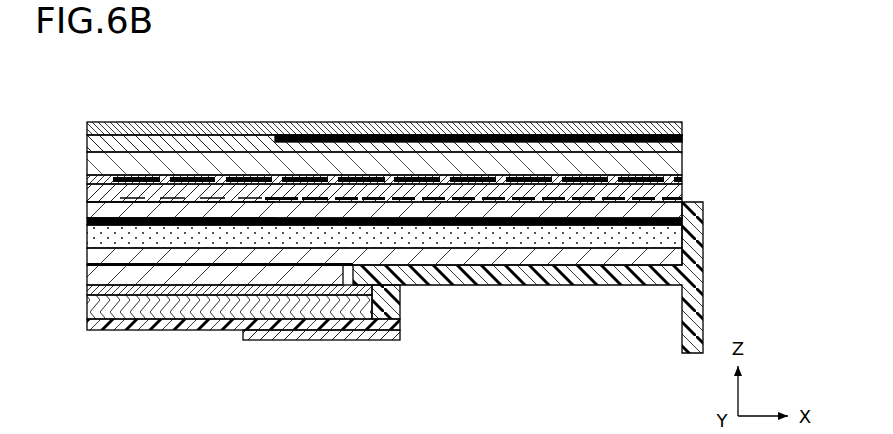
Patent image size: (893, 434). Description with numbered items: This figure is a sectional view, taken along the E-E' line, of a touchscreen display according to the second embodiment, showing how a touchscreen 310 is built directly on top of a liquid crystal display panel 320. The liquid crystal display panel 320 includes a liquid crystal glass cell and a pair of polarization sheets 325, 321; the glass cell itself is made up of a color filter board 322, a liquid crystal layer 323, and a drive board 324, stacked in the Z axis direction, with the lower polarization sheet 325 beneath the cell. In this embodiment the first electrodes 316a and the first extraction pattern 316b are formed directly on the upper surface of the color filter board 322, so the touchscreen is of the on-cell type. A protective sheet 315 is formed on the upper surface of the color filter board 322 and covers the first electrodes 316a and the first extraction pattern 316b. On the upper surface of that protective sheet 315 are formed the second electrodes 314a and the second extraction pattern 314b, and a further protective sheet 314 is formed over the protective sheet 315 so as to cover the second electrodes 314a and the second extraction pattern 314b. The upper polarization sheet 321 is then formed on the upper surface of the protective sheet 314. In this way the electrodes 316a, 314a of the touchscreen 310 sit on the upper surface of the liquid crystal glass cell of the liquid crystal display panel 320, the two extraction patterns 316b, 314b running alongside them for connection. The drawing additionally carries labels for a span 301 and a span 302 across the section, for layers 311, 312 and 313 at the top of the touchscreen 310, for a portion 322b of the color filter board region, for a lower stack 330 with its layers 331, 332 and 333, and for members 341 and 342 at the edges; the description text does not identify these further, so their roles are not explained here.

The first region 301 is at (275, 47).
The second region 302 is at (682, 47).
The touchscreen 310 is at (84, 123).
The first layer 311 is at (683, 128).
The light shielding layer 312 is at (683, 138).
The adhesive layer 313 is at (683, 148).
The polarization sheet 321 is at (683, 165).
The protective sheet 314 is at (425, 141).
The second electrodes 314a is at (122, 178).
The second extraction pattern 314b is at (314, 178).
The protective sheet 315 is at (425, 151).
The first electrodes 316a is at (212, 196).
The first extraction pattern 316b is at (399, 197).
The liquid crystal display panel 320 is at (84, 205).
The color filter board 322 is at (384, 297).
The display layer portion 322b is at (160, 207).
The liquid crystal layer 323 is at (568, 240).
The drive board 324 is at (520, 255).
The polarization sheet 325 is at (127, 298).
The lower laminate 330 is at (84, 287).
The first lower layer 331 is at (402, 299).
The second lower layer 332 is at (370, 313).
The third lower layer 333 is at (402, 340).
The first frame 341 is at (243, 338).
The second frame 342 is at (693, 272).